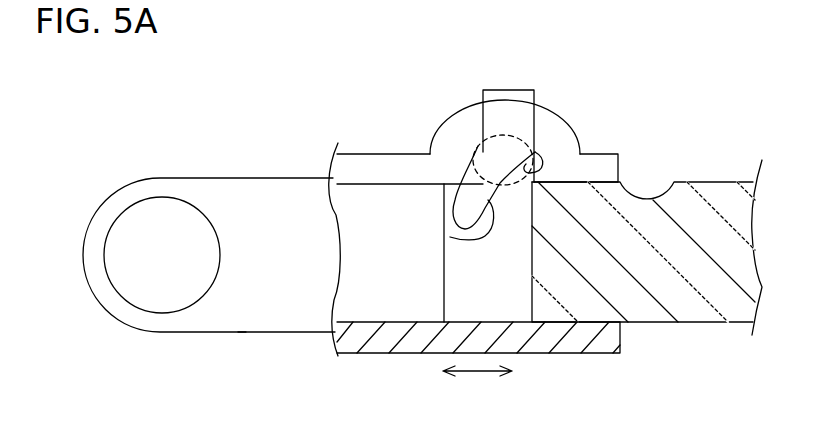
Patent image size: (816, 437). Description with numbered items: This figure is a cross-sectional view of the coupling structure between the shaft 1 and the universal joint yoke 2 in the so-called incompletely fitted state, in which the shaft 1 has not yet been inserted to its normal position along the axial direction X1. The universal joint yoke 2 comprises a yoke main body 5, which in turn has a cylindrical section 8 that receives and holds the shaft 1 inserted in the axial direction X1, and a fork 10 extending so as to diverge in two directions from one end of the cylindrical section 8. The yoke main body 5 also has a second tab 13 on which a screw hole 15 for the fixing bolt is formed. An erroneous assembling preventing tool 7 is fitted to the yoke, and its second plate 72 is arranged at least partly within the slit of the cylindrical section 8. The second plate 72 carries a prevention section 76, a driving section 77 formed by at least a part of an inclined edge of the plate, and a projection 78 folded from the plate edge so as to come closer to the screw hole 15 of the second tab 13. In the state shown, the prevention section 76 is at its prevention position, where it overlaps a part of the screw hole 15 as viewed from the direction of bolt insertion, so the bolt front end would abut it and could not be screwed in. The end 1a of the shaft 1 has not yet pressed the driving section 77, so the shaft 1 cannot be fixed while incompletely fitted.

The shaft 1 is at (716, 170).
The end of the shaft 1a is at (575, 305).
The universal joint yoke 2 is at (368, 78).
The yoke main body 5 is at (205, 158).
The erroneous assembling preventing tool 7 is at (432, 123).
The cylindrical section 8 is at (412, 345).
The fork 10 is at (242, 320).
The second tab 13 is at (555, 135).
The screw hole 15 is at (530, 180).
The second plate 72 is at (500, 100).
The prevention section 76 is at (502, 152).
The driving section 77 is at (450, 238).
The projection 78 is at (470, 142).
The axial direction X1 is at (475, 372).